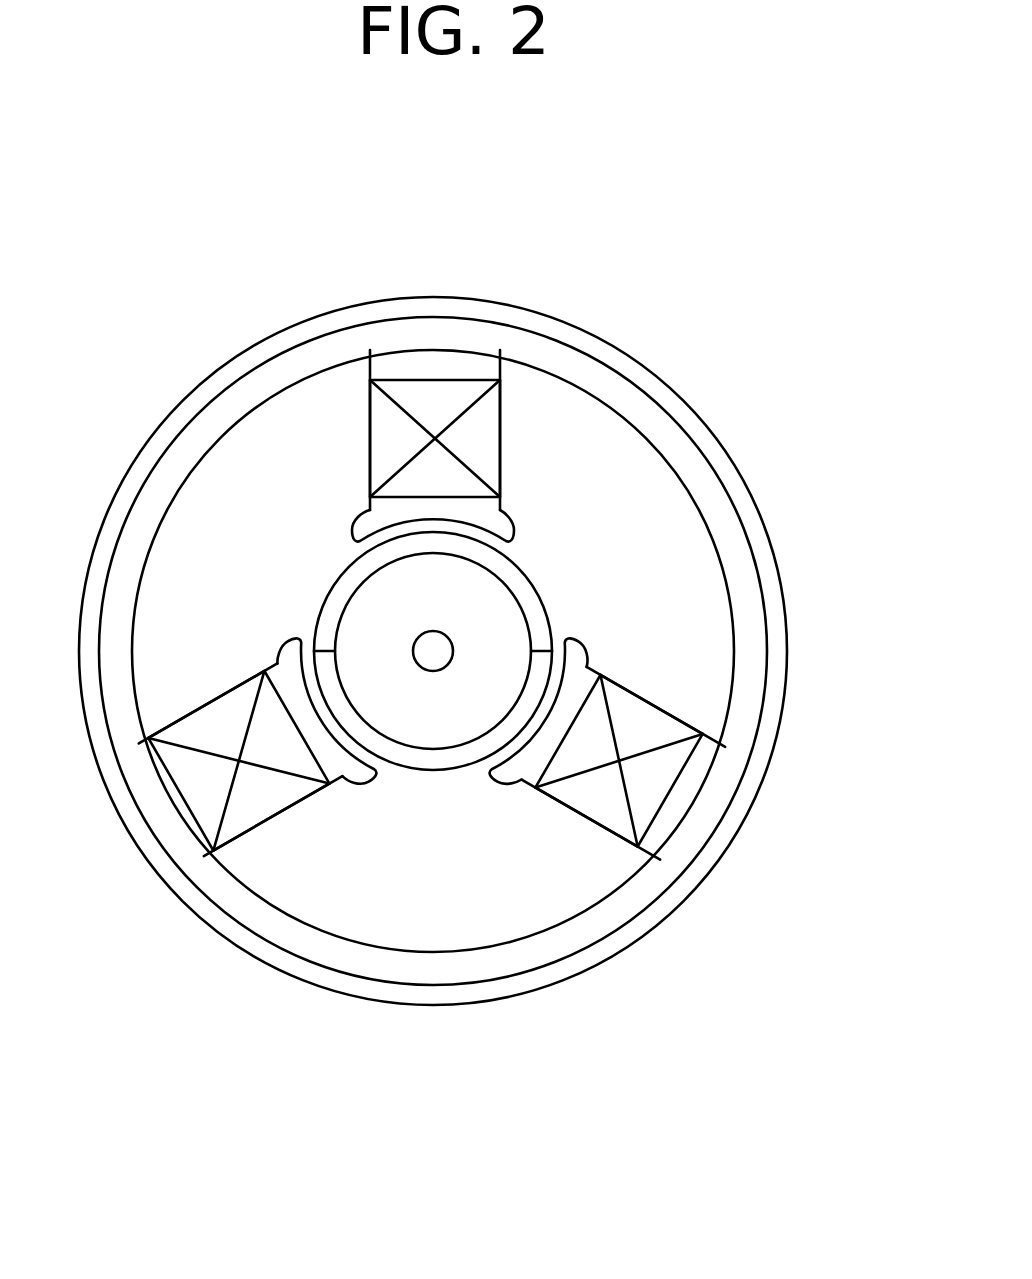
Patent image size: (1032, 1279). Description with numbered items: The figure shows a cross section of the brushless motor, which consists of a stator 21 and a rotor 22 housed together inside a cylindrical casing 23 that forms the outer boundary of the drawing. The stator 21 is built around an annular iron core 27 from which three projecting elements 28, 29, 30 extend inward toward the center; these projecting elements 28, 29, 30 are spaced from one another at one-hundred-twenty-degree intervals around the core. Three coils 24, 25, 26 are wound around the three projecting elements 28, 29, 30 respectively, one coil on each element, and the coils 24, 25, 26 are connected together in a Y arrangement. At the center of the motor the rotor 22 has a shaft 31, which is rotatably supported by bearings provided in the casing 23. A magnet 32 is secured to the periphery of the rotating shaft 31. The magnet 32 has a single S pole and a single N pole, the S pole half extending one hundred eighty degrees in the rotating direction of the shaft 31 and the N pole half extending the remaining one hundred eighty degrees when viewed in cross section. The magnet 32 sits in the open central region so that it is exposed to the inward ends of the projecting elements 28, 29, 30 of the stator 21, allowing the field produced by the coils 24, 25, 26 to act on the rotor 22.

The stator 21 is at (272, 490).
The rotor 22 is at (412, 822).
The cylindrical casing 23 is at (660, 380).
The coil 24 is at (368, 437).
The coil 25 is at (637, 873).
The coil 26 is at (268, 820).
The iron core 27 is at (573, 942).
The projecting element 28 is at (507, 517).
The projecting element 29 is at (577, 640).
The projecting element 30 is at (368, 787).
The shaft 31 is at (443, 669).
The magnet 32 is at (535, 583).